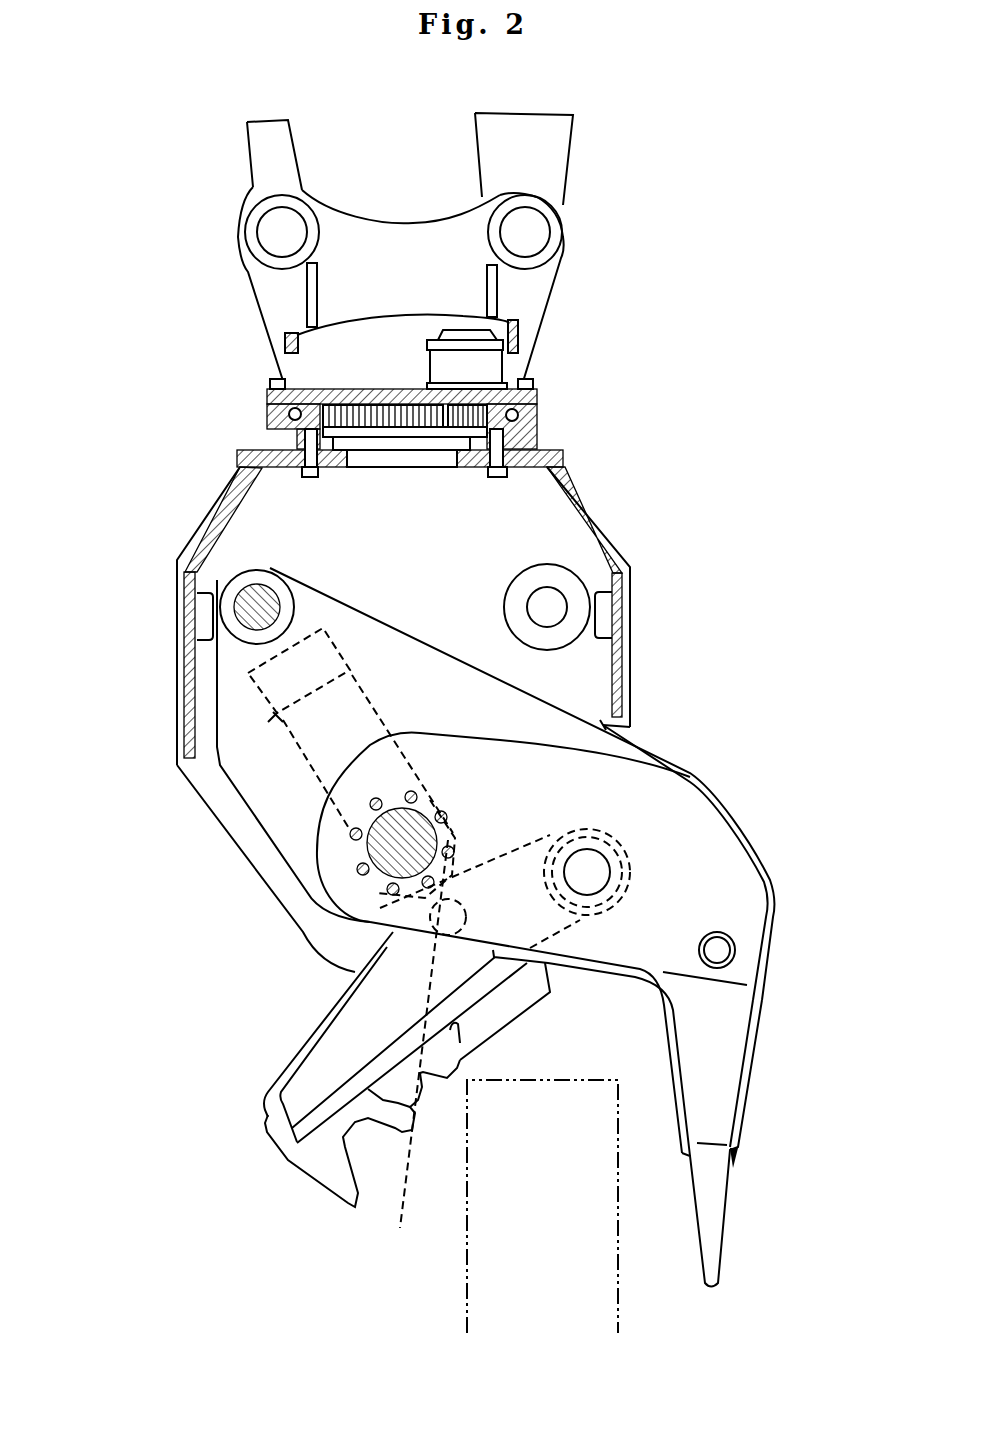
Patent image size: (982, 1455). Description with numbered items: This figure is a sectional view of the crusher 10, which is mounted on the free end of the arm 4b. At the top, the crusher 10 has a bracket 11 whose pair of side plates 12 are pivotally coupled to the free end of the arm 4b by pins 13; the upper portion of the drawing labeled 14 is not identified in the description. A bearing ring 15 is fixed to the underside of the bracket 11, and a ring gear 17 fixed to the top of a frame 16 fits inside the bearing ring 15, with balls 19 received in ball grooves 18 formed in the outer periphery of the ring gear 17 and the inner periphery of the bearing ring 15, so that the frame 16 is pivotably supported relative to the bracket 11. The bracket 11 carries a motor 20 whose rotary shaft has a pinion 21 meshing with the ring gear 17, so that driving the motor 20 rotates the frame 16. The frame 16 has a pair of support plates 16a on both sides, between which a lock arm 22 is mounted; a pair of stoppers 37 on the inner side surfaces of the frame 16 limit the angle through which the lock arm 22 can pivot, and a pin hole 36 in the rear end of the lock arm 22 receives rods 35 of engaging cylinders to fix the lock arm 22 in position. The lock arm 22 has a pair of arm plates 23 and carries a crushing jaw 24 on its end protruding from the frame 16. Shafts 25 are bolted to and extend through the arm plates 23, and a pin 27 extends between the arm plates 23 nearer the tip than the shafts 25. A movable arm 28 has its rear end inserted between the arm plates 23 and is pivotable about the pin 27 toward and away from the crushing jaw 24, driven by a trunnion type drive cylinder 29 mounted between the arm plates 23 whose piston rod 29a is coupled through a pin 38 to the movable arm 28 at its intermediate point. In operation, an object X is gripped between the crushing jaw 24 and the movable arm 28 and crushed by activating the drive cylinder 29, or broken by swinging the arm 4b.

The crusher 10 is at (176, 658).
The bracket 11 is at (267, 391).
The side plates 12 is at (307, 360).
The pins 13 is at (540, 237).
The arm 14 is at (262, 146).
The arm 4b is at (560, 157).
The bearing ring 15 is at (268, 422).
The frame 16 is at (634, 569).
The support plates 16a is at (585, 680).
The ring gear 17 is at (523, 434).
The ball grooves 18 is at (292, 415).
The balls 19 is at (535, 406).
The motor 20 is at (492, 357).
The pinion 21 is at (460, 424).
The lock arm 22 is at (246, 815).
The arm plates 23 is at (660, 782).
The crushing jaw 24 is at (717, 1207).
The shafts 25 is at (370, 857).
The pin 27 is at (597, 868).
The movable arm 28 is at (338, 1030).
The drive cylinder 29 is at (270, 728).
The piston rod 29a is at (340, 920).
The rods 35 is at (282, 592).
The pin hole 36 is at (248, 597).
The stoppers 37 is at (203, 608).
The pin 38 is at (413, 1049).
The object X is at (610, 1273).